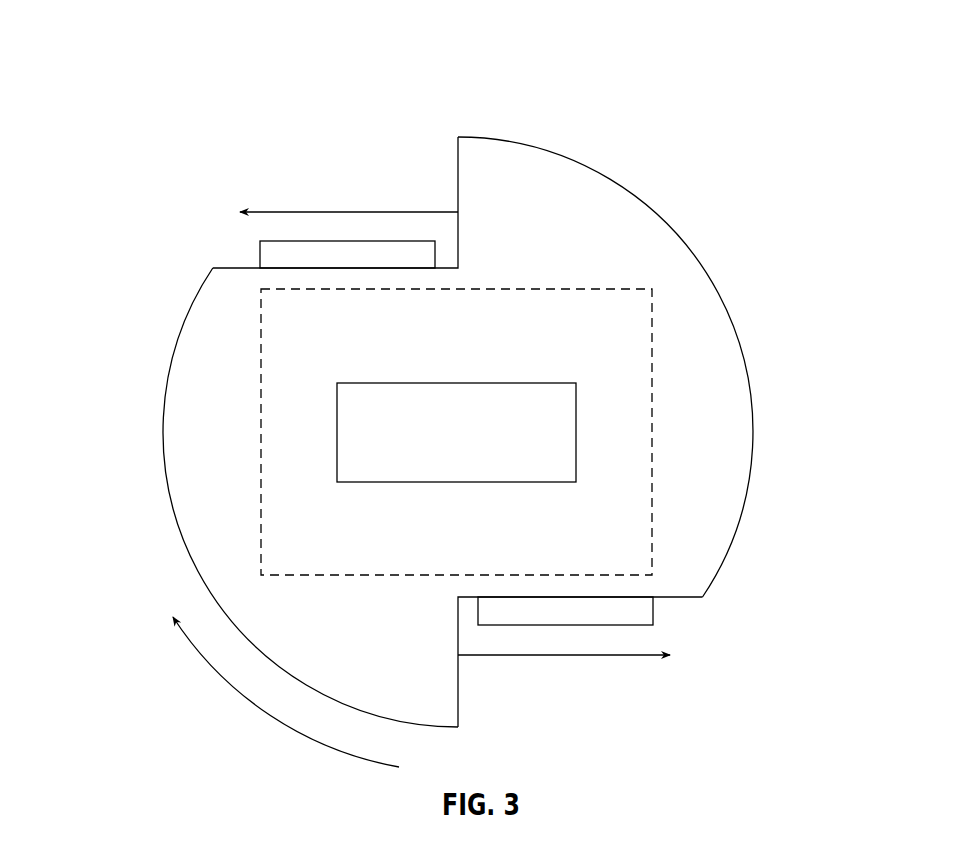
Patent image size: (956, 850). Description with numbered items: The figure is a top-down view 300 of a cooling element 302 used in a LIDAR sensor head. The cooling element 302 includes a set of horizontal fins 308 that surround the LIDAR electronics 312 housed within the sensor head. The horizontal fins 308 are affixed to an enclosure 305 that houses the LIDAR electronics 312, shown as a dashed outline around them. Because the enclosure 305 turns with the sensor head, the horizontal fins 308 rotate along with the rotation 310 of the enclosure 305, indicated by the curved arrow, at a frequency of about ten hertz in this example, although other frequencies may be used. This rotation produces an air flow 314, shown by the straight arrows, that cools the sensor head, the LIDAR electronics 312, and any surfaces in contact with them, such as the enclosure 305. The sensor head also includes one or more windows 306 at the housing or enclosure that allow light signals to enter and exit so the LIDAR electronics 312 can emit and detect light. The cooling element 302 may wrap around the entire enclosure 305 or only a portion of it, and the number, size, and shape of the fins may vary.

The top-down view 300 is at (165, 37).
The cooling element 302 is at (436, 415).
The enclosure 305 is at (652, 289).
The windows 306 is at (260, 255).
The horizontal fins 308 is at (580, 140).
The rotation 310 is at (262, 713).
The LIDAR electronics 312 is at (478, 447).
The air flow 314 is at (350, 212).